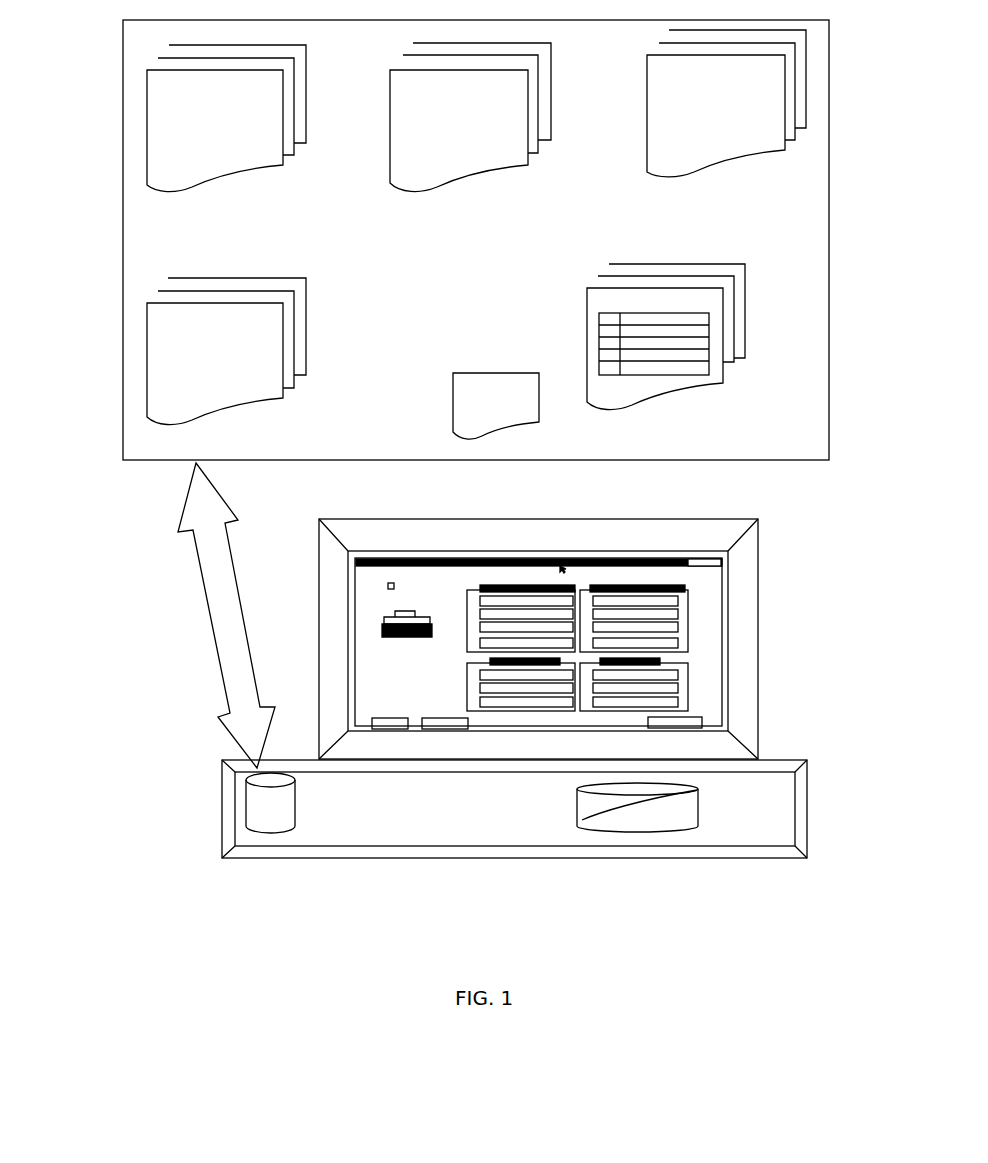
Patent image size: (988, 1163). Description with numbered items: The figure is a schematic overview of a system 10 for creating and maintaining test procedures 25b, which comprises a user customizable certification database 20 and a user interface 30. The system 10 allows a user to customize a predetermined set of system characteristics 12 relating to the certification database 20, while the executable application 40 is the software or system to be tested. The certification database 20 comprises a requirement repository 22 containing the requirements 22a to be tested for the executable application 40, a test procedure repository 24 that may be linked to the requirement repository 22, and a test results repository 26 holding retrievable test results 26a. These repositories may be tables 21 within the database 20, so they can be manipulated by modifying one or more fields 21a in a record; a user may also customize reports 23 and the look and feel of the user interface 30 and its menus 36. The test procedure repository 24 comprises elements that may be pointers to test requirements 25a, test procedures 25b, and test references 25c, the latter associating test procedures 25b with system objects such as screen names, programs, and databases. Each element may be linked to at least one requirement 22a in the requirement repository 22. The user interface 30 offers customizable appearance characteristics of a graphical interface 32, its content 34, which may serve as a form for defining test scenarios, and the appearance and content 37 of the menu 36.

The system 10 is at (150, 713).
The system characteristics 12 is at (747, 103).
The certification database 20 is at (100, 450).
The tables 21 is at (744, 337).
The fields 21a is at (673, 361).
The requirement repository 22 is at (167, 122).
The requirements 22a is at (160, 107).
The reports 23 is at (489, 373).
The test procedure repository 24 is at (226, 350).
The test requirements 25a is at (282, 375).
The test procedures 25b is at (293, 302).
The test references 25c is at (306, 278).
The test results repository 26 is at (493, 156).
The test results 26a is at (452, 142).
The user interface 30 is at (538, 619).
The graphical interface 32 is at (538, 604).
The content of graphical interface 34 is at (445, 628).
The menu 36 is at (575, 567).
The content of menu 37 is at (488, 567).
The executable application 40 is at (648, 820).